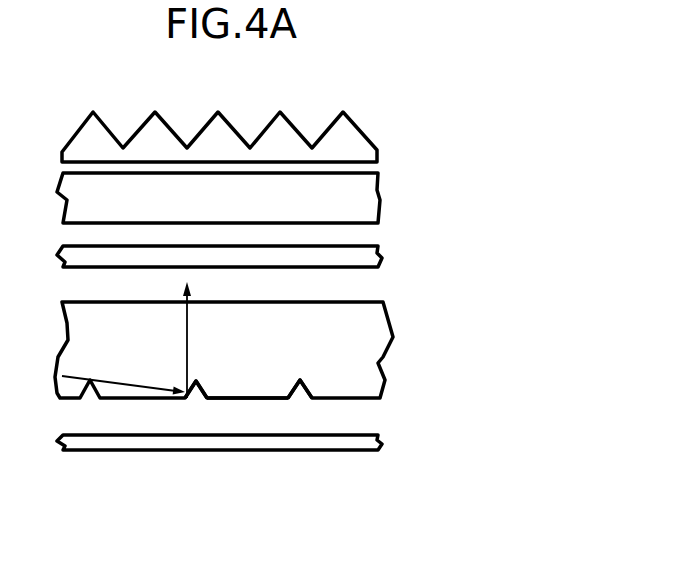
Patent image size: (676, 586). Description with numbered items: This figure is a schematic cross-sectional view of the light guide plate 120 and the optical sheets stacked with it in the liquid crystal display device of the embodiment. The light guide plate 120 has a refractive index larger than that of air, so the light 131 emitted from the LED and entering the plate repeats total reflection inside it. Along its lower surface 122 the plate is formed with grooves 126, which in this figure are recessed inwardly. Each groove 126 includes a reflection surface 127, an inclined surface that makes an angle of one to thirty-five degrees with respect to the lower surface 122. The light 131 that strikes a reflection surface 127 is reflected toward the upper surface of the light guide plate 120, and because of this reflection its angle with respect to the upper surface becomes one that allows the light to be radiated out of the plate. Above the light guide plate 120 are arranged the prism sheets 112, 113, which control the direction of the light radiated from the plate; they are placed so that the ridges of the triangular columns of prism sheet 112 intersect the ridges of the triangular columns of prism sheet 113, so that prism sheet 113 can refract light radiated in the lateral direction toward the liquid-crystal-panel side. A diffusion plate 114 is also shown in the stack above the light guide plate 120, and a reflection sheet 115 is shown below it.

The prism sheet 112 is at (378, 152).
The prism sheet 113 is at (380, 205).
The diffusion plate 114 is at (382, 258).
The reflection sheet 115 is at (382, 444).
The light guide plate 120 is at (375, 347).
The lower surface 122 is at (252, 398).
The groove 126 is at (302, 397).
The reflection surface 127 is at (187, 398).
The light 131 is at (140, 387).